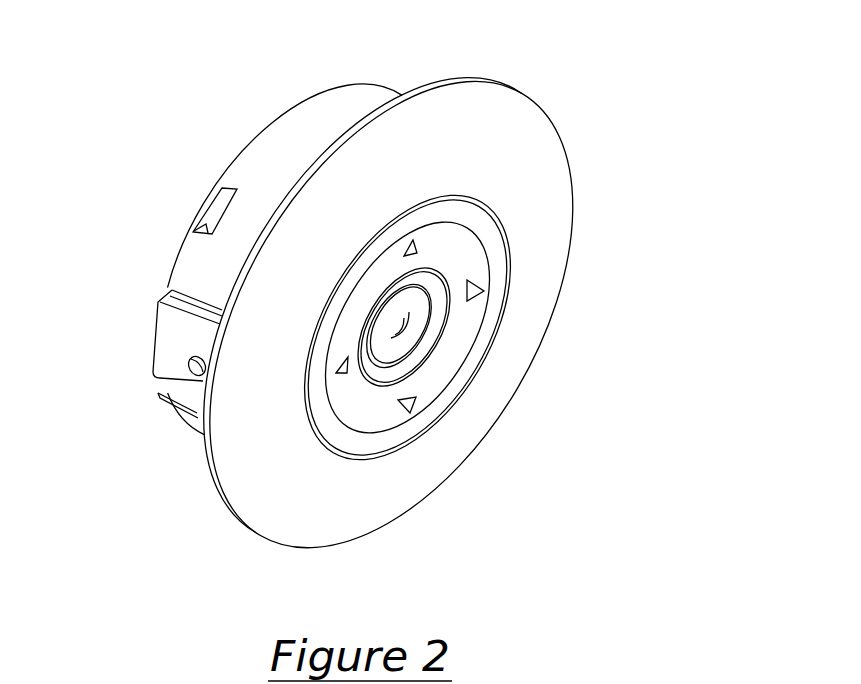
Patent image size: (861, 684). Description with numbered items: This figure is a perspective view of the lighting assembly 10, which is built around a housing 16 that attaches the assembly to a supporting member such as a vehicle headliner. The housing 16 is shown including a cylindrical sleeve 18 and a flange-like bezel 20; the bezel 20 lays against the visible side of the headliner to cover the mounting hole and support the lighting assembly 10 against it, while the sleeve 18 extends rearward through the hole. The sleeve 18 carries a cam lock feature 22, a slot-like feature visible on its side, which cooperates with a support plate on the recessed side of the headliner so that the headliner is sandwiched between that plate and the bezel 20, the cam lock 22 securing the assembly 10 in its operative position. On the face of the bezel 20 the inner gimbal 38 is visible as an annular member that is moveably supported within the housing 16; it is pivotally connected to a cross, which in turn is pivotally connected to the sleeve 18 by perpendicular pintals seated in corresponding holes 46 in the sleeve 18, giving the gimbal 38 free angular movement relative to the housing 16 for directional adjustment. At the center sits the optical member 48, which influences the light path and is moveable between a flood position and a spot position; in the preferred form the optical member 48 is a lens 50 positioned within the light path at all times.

The lighting assembly 10 is at (719, 166).
The housing 16 is at (237, 537).
The cylindrical sleeve 18 is at (333, 108).
The flange-like bezel 20 is at (540, 146).
The cam lock feature 22 is at (212, 203).
The inner gimbal 38 is at (523, 278).
The holes 46 is at (187, 369).
The optical member 48 is at (367, 385).
The lens 50 is at (393, 307).